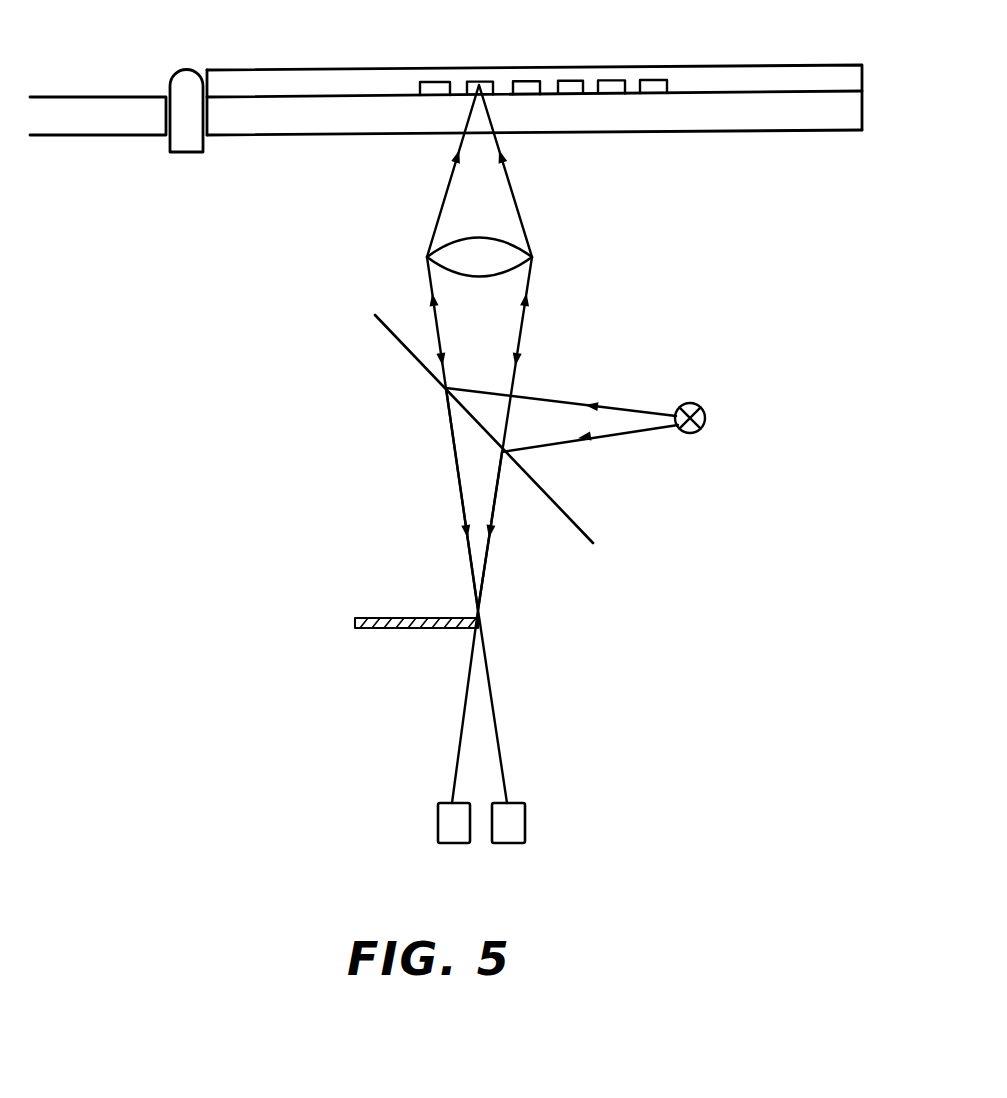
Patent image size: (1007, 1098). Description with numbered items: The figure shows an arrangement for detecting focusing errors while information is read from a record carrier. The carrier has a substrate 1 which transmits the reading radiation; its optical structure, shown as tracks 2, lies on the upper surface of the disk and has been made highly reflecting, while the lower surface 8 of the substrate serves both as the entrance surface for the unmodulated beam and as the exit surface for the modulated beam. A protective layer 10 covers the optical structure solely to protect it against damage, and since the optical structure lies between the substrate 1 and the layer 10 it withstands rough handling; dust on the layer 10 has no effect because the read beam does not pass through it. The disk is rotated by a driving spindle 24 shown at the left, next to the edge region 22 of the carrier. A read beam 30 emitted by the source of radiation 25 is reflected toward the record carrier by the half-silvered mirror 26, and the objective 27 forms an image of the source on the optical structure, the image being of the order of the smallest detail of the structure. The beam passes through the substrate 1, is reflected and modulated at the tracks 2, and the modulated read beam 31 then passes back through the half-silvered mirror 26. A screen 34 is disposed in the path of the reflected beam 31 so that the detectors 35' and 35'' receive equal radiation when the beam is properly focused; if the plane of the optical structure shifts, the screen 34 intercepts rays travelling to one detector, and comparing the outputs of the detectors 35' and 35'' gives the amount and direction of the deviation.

The carrier substrate 1 is at (853, 115).
The tracks 2 is at (435, 82).
The lower surface of the substrate 8 is at (742, 133).
The protective layer 10 is at (851, 72).
The edge of board 22 is at (214, 60).
The driving spindle 24 is at (186, 142).
The source of radiation 25 is at (690, 434).
The half-silvered mirror 26 is at (400, 348).
The objective 27 is at (533, 257).
The read beam 30 is at (603, 433).
The modulated read beam 31 is at (493, 502).
The screen 34 is at (420, 630).
The detector 35' is at (421, 823).
The detector 35'' is at (538, 823).